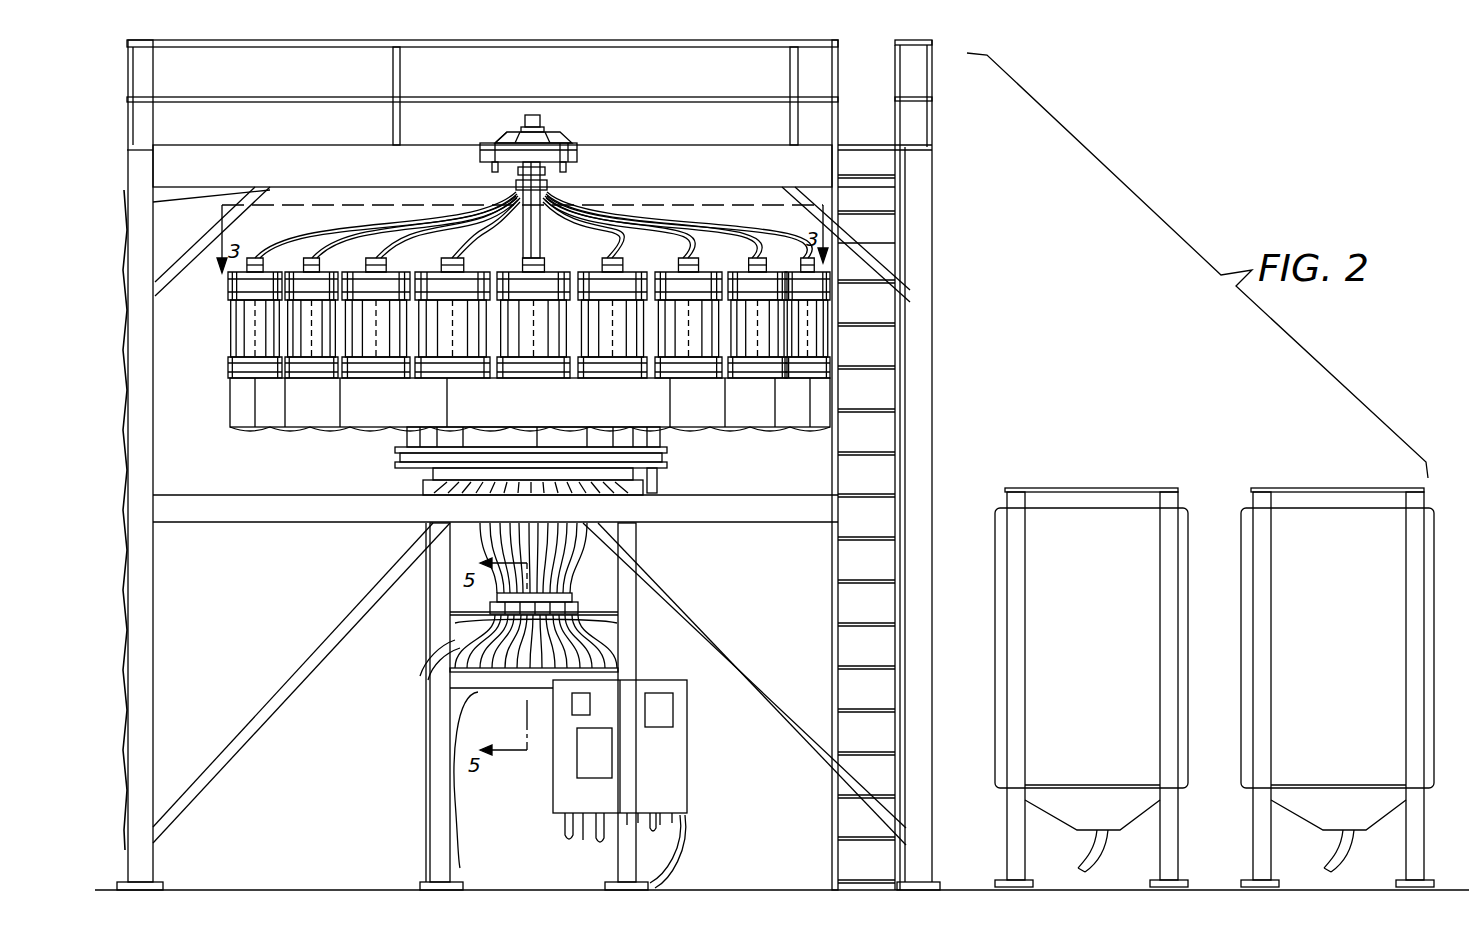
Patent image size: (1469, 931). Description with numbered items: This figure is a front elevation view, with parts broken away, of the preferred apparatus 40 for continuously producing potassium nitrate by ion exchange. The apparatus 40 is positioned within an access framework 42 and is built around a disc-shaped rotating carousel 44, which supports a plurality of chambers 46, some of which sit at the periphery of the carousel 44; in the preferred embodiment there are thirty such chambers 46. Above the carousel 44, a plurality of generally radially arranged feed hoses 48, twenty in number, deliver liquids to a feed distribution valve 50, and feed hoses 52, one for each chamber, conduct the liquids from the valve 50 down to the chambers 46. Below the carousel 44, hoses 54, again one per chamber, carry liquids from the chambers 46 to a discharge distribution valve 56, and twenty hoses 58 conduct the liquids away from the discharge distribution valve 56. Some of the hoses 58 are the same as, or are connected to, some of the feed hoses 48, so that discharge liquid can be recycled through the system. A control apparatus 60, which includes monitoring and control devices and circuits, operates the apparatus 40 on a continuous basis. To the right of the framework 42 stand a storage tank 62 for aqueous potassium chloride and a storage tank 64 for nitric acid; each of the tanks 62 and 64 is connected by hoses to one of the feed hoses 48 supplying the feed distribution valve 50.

The apparatus 40 is at (940, 400).
The access framework 42 is at (936, 453).
The disc-shaped rotating carousel 44 is at (495, 413).
The chambers 46 is at (596, 335).
The feed hoses 48 is at (576, 150).
The feed distribution valve 50 is at (574, 158).
The feed hoses 52 is at (574, 217).
The hoses 54 is at (577, 552).
The discharge distribution valve 56 is at (580, 606).
The hoses 58 is at (450, 683).
The control apparatus 60 is at (665, 755).
The storage tank 62 is at (1105, 672).
The storage tank 64 is at (1351, 672).